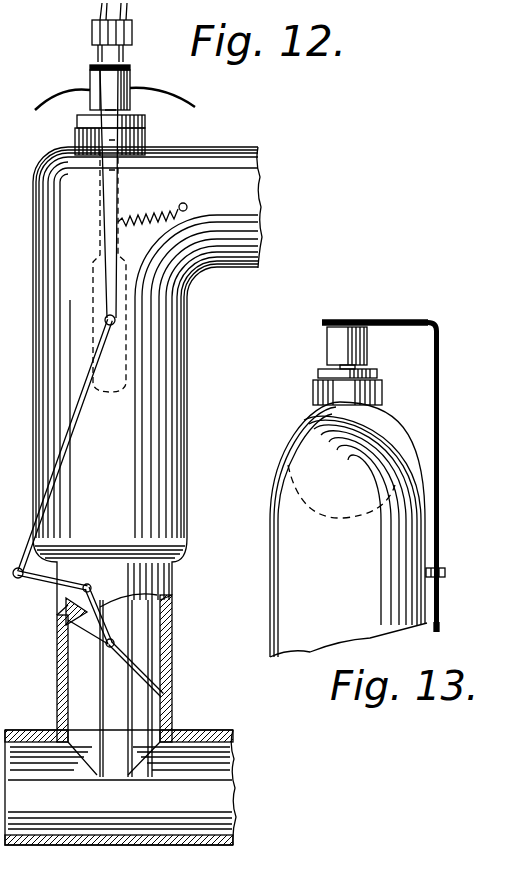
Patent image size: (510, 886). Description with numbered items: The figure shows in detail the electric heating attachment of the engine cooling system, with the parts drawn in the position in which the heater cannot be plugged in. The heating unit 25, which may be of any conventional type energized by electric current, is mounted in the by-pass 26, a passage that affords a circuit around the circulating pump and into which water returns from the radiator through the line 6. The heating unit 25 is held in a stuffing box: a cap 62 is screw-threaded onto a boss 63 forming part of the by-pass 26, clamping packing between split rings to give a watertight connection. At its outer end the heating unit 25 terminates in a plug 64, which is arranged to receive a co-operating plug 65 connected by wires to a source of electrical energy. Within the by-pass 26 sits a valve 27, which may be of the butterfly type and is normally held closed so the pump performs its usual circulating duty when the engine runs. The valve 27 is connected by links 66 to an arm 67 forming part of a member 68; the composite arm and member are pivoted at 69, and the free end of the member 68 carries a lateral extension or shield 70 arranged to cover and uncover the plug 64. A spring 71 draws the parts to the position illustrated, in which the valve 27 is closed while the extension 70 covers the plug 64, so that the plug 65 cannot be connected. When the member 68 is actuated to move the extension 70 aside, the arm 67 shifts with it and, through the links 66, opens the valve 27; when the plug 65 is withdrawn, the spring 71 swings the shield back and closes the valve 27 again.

In FIG. 12, the line 6 is at (128, 847).
In FIG. 12, the heating unit 25 is at (127, 337).
In FIG. 12, the by-pass 26 is at (190, 440).
In FIG. 13, the by-pass 26 is at (348, 529).
In FIG. 12, the valve 27 is at (140, 667).
In FIG. 12, the cap 62 is at (77, 122).
In FIG. 13, the cap 62 is at (378, 375).
In FIG. 12, the boss 63 is at (146, 142).
In FIG. 13, the boss 63 is at (313, 400).
In FIG. 12, the plug 64 is at (130, 81).
In FIG. 13, the plug 64 is at (336, 345).
In FIG. 12, the co-operating plug 65 is at (92, 30).
In FIG. 12, the links 66 is at (76, 417).
In FIG. 12, the arm 67 is at (20, 580).
In FIG. 13, the arm 67 is at (436, 631).
In FIG. 12, the member 68 is at (105, 178).
In FIG. 13, the member 68 is at (434, 408).
In FIG. 12, the pivot 69 is at (105, 322).
In FIG. 13, the pivot 69 is at (445, 570).
In FIG. 12, the lateral extension or shield 70 is at (130, 68).
In FIG. 13, the lateral extension or shield 70 is at (381, 321).
In FIG. 12, the spring 71 is at (148, 223).